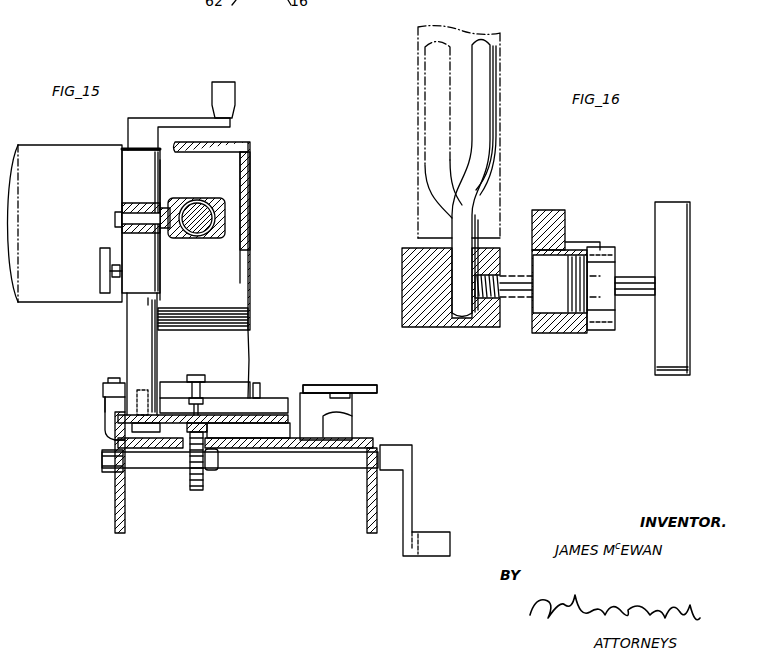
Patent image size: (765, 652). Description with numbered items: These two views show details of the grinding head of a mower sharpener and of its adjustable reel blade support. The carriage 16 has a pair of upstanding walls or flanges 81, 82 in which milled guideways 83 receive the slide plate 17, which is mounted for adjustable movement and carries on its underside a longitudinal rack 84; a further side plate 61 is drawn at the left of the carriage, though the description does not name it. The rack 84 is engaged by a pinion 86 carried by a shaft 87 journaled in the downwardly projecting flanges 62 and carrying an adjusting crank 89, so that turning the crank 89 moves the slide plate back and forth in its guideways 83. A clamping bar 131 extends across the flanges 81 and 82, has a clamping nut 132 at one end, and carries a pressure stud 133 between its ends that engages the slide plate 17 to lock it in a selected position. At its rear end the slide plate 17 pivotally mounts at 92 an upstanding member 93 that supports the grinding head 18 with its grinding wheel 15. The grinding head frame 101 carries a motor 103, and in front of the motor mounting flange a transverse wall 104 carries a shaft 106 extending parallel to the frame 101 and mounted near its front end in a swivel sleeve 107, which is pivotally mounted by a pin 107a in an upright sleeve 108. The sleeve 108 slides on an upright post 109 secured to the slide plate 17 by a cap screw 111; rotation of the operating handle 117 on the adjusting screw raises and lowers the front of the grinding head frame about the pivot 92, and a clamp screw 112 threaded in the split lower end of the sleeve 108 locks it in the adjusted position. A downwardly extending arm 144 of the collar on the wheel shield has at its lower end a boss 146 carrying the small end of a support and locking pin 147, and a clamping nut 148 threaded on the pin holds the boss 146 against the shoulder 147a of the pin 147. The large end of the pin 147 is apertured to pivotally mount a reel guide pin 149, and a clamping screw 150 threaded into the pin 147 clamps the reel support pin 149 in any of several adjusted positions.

In FIG. 16, the grinding wheel 15 is at (500, 35).
In FIG. 15, the carriage 16 is at (112, 446).
In FIG. 15, the slide plate 17 is at (250, 425).
In FIG. 15, the grinder head 18 is at (260, 142).
In FIG. 15, the side plate 61 is at (116, 505).
In FIG. 15, the downwardly projecting flanges 62 is at (368, 525).
In FIG. 15, the upstanding wall 81 is at (113, 437).
In FIG. 15, the upstanding wall 82 is at (296, 414).
In FIG. 15, the guideways 83 is at (115, 420).
In FIG. 15, the longitudinal rack 84 is at (207, 425).
In FIG. 15, the pinion 86 is at (198, 490).
In FIG. 15, the shaft 87 is at (308, 462).
In FIG. 15, the adjusting crank 89 is at (405, 496).
In FIG. 15, the pivot 92 is at (258, 385).
In FIG. 15, the upstanding member 93 is at (233, 345).
In FIG. 15, the grinding head frame 101 is at (247, 226).
In FIG. 15, the motor 103 is at (73, 160).
In FIG. 15, the transverse wall 104 is at (218, 265).
In FIG. 15, the shaft 106 is at (210, 226).
In FIG. 15, the swivel sleeve 107 is at (207, 198).
In FIG. 15, the pin 107a is at (130, 220).
In FIG. 15, the upright sleeve 108 is at (160, 255).
In FIG. 15, the upright post 109 is at (147, 368).
In FIG. 15, the cap screw 111 is at (145, 435).
In FIG. 15, the clamp screw 112 is at (100, 258).
In FIG. 15, the operating handle 117 is at (182, 100).
In FIG. 15, the clamping bar 131 is at (236, 407).
In FIG. 15, the clamping nut 132 is at (358, 390).
In FIG. 15, the pressure stud 133 is at (200, 385).
In FIG. 16, the downwardly extending arm 144 is at (548, 212).
In FIG. 16, the boss 146 is at (560, 330).
In FIG. 16, the support and locking pin 147 is at (425, 320).
In FIG. 16, the shoulder 147a is at (550, 327).
In FIG. 16, the clamping nut 148 is at (597, 250).
In FIG. 16, the reel guide pin 149 is at (485, 125).
In FIG. 16, the clamping screw 150 is at (628, 283).